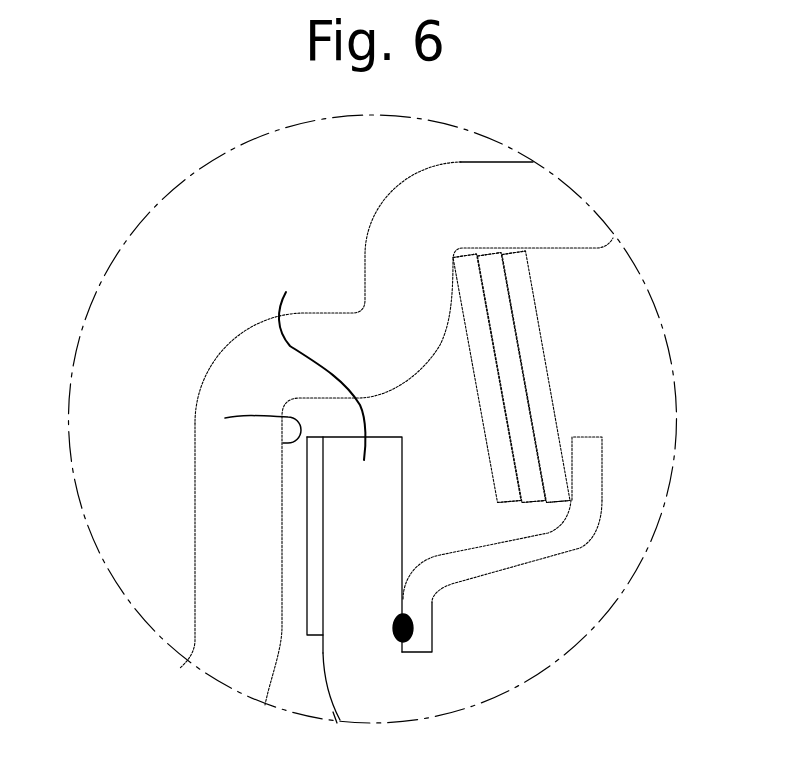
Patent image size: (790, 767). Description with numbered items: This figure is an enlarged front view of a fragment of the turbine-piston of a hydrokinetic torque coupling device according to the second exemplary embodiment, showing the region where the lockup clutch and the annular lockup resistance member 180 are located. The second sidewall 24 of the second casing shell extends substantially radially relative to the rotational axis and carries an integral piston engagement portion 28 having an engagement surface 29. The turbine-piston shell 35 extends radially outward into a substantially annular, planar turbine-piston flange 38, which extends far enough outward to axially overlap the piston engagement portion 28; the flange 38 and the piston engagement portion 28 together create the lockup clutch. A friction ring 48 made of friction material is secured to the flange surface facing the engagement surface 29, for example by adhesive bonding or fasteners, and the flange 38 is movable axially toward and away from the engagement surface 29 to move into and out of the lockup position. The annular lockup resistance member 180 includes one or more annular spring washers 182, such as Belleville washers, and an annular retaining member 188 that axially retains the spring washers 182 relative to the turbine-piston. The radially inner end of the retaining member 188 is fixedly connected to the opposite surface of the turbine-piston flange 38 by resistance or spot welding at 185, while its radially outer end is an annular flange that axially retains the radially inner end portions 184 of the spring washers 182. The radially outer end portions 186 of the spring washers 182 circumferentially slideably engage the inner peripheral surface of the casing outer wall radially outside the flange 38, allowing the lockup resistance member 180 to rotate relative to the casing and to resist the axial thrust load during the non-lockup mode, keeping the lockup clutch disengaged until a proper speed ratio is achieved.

The second sidewall 24 is at (230, 662).
The piston engagement portion 28 is at (233, 476).
The engagement surface 29 is at (225, 418).
The turbine-piston shell 35 is at (394, 708).
The turbine-piston flange 38 is at (318, 363).
The friction ring 48 is at (313, 622).
The annular lockup resistance member 180 is at (534, 452).
The spring washers 182 is at (528, 333).
The radially inner end portion 184 is at (557, 487).
The spot welding 185 is at (393, 630).
The radially outer end portion 186 is at (465, 275).
The annular retaining member 188 is at (497, 562).